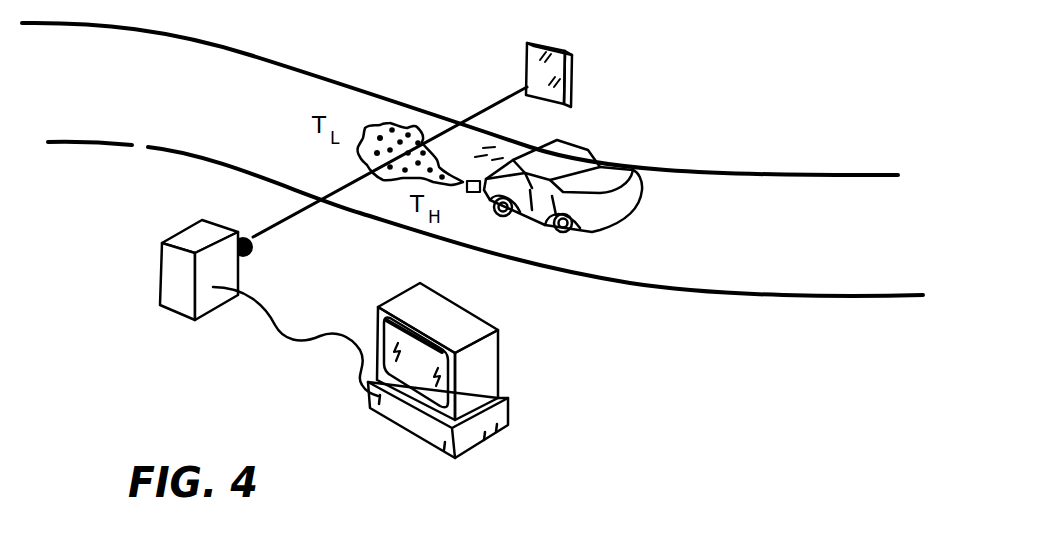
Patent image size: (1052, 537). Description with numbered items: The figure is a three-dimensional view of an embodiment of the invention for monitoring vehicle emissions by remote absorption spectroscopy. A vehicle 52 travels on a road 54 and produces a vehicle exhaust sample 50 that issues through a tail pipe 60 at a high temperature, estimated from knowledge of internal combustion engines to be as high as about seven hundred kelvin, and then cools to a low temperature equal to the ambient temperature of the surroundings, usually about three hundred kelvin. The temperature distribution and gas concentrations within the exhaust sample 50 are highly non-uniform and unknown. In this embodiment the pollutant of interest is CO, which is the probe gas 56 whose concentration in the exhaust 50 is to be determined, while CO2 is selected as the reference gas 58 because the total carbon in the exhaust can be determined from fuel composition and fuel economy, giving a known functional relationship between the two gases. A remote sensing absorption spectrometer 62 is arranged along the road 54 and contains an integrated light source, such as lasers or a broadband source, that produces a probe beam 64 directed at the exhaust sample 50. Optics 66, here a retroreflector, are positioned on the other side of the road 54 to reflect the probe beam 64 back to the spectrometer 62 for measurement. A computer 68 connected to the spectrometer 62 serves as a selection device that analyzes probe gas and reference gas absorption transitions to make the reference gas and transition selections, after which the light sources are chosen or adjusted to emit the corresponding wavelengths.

The vehicle exhaust sample 50 is at (391, 122).
The vehicle 52 is at (635, 182).
The road 54 is at (253, 50).
The probe gas 56 is at (380, 138).
The reference gas 58 is at (360, 155).
The tail pipe 60 is at (477, 185).
The remote sensing absorption spectrometer 62 is at (160, 267).
The probe beam 64 is at (282, 218).
The optics 66 is at (573, 79).
The computer 68 is at (498, 370).